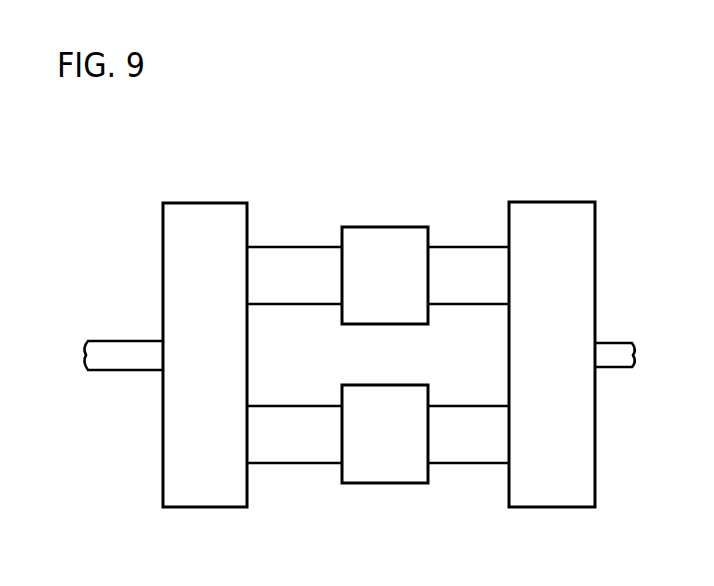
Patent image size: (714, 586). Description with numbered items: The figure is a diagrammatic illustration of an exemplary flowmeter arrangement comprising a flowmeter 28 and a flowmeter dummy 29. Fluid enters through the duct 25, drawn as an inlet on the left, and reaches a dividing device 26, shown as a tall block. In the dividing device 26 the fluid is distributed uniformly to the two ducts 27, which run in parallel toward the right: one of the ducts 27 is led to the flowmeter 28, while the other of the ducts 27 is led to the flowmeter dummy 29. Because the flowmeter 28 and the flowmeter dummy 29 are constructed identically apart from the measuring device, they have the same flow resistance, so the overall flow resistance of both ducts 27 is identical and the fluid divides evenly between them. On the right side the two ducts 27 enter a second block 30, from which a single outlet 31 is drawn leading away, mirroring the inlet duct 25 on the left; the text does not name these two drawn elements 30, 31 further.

The duct 25 is at (112, 353).
The dividing device 26 is at (210, 220).
The ducts 27 is at (290, 258).
The flowmeter 28 is at (362, 247).
The flowmeter dummy 29 is at (377, 472).
The second gear unit 30 is at (530, 222).
The output shaft 31 is at (618, 352).